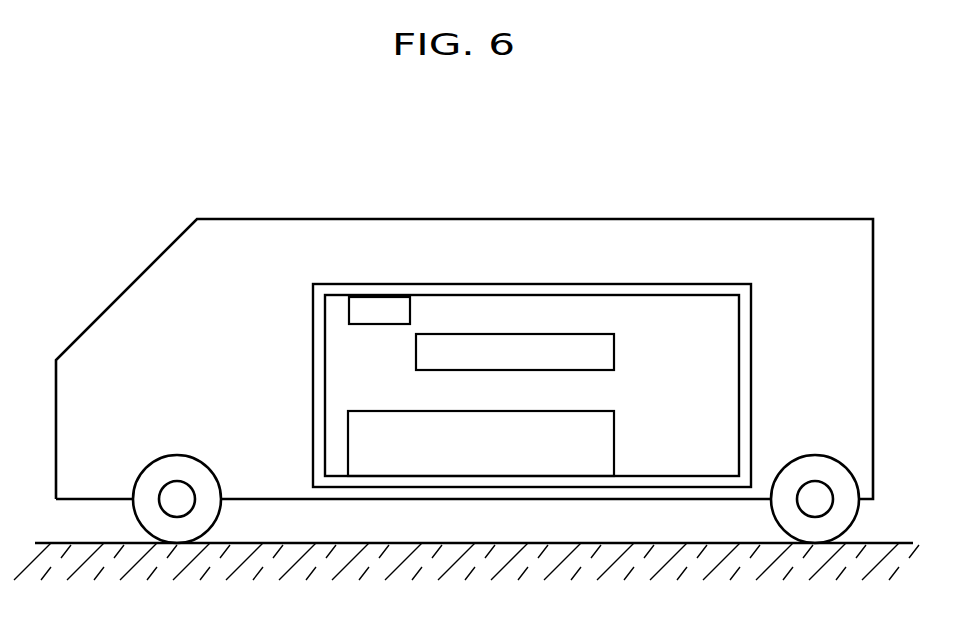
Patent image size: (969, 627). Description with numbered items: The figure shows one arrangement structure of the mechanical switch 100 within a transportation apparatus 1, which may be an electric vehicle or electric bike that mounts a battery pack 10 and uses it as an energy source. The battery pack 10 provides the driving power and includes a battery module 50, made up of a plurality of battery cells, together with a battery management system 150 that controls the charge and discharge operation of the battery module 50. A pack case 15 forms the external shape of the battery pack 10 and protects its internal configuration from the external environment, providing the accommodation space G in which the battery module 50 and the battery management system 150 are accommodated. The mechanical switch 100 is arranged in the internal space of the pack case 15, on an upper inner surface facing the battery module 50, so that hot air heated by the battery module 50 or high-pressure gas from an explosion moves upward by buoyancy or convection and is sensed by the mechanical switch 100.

The transportation apparatus 1 is at (247, 235).
The battery pack 10 is at (695, 280).
The pack case 15 is at (550, 292).
The battery module 50 is at (584, 457).
The mechanical switch 100 is at (359, 305).
The battery management system 150 is at (454, 342).
The accommodation space G is at (678, 457).